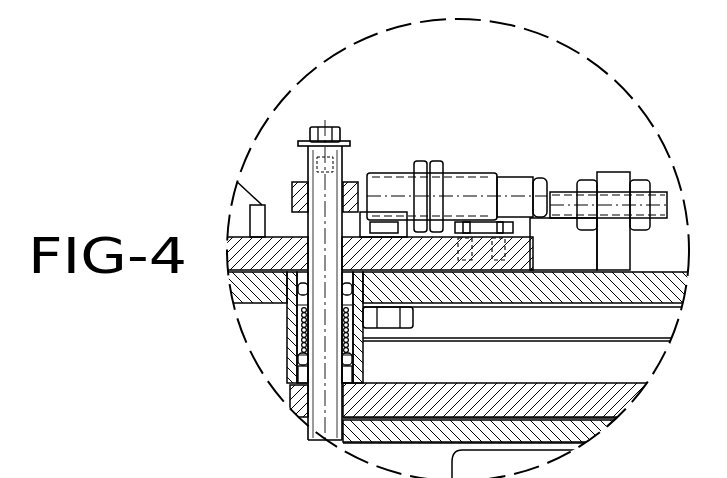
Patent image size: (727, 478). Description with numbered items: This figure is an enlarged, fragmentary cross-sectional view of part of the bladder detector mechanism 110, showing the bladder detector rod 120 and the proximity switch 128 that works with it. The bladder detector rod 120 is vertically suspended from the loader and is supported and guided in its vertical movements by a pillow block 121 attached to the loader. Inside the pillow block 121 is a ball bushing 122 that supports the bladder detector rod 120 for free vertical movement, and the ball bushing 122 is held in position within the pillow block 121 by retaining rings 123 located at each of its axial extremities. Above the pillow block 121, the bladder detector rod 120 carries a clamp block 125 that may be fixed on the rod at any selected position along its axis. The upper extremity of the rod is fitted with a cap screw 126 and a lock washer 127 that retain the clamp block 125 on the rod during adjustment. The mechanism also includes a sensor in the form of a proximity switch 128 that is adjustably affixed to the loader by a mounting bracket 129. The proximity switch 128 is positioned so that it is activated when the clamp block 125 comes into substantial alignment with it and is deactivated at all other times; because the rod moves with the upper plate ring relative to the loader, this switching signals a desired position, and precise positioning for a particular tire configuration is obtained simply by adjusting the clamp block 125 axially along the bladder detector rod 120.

The bladder detector mechanism 110 is at (408, 114).
The bladder detector rod 120 is at (316, 222).
The pillow block 121 is at (307, 370).
The ball bushing 122 is at (307, 338).
The retaining rings 123 is at (302, 283).
The clamp block 125 is at (300, 183).
The cap screw 126 is at (340, 133).
The lock washer 127 is at (302, 140).
The proximity switch 128 is at (473, 185).
The mounting bracket 129 is at (512, 232).